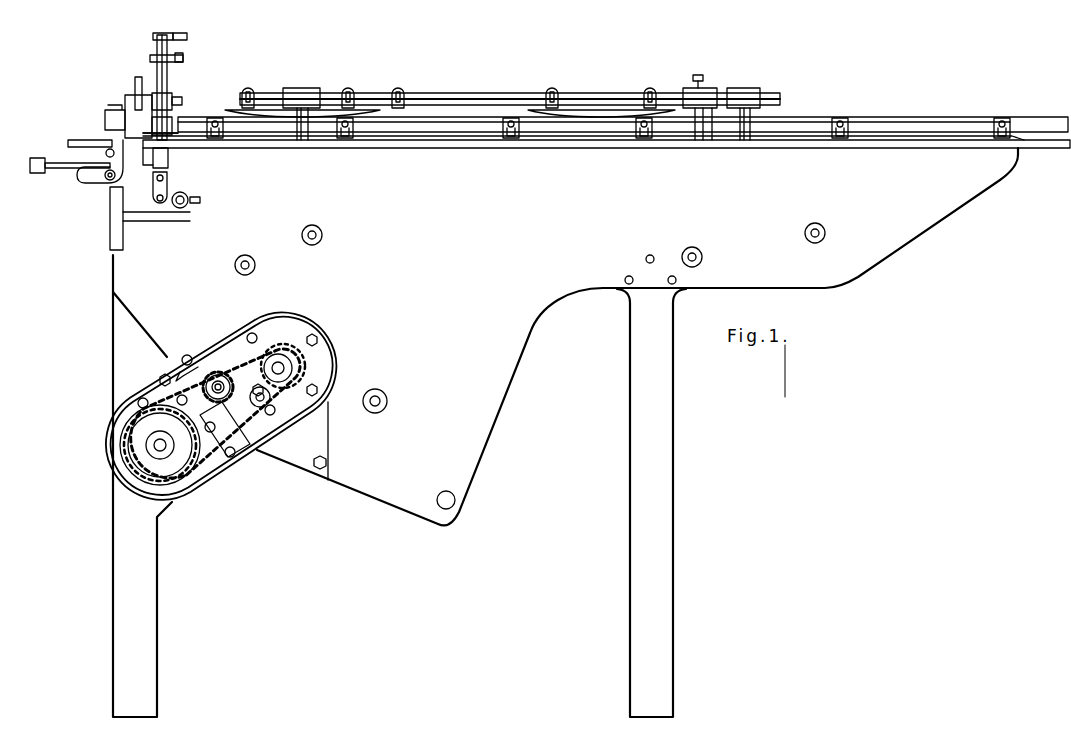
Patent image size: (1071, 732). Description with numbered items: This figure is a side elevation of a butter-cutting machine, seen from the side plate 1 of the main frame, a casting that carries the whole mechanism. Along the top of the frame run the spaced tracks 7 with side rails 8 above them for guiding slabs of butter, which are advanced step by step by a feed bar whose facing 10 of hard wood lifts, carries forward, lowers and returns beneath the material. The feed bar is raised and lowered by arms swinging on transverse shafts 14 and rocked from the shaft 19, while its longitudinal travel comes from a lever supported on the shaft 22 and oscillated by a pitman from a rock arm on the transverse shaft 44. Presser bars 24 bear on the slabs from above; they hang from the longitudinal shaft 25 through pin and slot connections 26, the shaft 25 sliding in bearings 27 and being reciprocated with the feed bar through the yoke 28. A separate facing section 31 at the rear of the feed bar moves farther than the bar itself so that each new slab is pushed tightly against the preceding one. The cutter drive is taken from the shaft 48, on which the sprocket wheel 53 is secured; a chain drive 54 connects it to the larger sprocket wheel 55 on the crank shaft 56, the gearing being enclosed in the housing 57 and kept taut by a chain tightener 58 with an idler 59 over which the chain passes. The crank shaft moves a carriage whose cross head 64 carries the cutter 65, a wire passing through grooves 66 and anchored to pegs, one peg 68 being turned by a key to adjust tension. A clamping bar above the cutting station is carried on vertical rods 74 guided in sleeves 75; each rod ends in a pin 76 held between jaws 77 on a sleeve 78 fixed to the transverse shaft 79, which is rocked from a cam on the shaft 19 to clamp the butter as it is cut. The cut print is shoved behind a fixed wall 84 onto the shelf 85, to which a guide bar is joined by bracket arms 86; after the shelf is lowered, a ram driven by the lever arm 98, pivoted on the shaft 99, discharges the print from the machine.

The side plate 1 is at (511, 359).
The track 7 is at (1050, 149).
The side rail 8 is at (1034, 124).
The facing 10 is at (574, 136).
The transverse shaft 14 is at (318, 228).
The shaft 19 is at (250, 260).
The shaft 22 is at (688, 252).
The presser bar 24 is at (462, 112).
The longitudinal shaft 25 is at (424, 98).
The pin and slot connection 26 is at (351, 97).
The bearing 27 is at (304, 90).
The yoke 28 is at (707, 90).
The facing section 31 is at (926, 137).
The transverse shaft 44 is at (380, 396).
The shaft 48 is at (283, 360).
The sprocket wheel 53 is at (294, 368).
The chain drive 54 is at (246, 432).
The sprocket wheel 55 is at (180, 472).
The crank shaft 56 is at (155, 446).
The housing 57 is at (275, 320).
The chain tightener 58 is at (246, 383).
The idler 59 is at (217, 374).
The cross head 64 is at (155, 52).
The cutter 65 is at (168, 82).
The groove 66 is at (152, 58).
The peg 68 is at (187, 37).
The vertical rod 74 is at (172, 98).
The sleeve 75 is at (170, 160).
The pin 76 is at (155, 198).
The jaw 77 is at (168, 190).
The sleeve 78 is at (200, 199).
The shaft 79 is at (186, 205).
The fixed wall 84 is at (108, 114).
The shelf 85 is at (80, 142).
The bracket arm 86 is at (106, 178).
The lever arm 98 is at (56, 171).
The shaft 99 is at (455, 500).